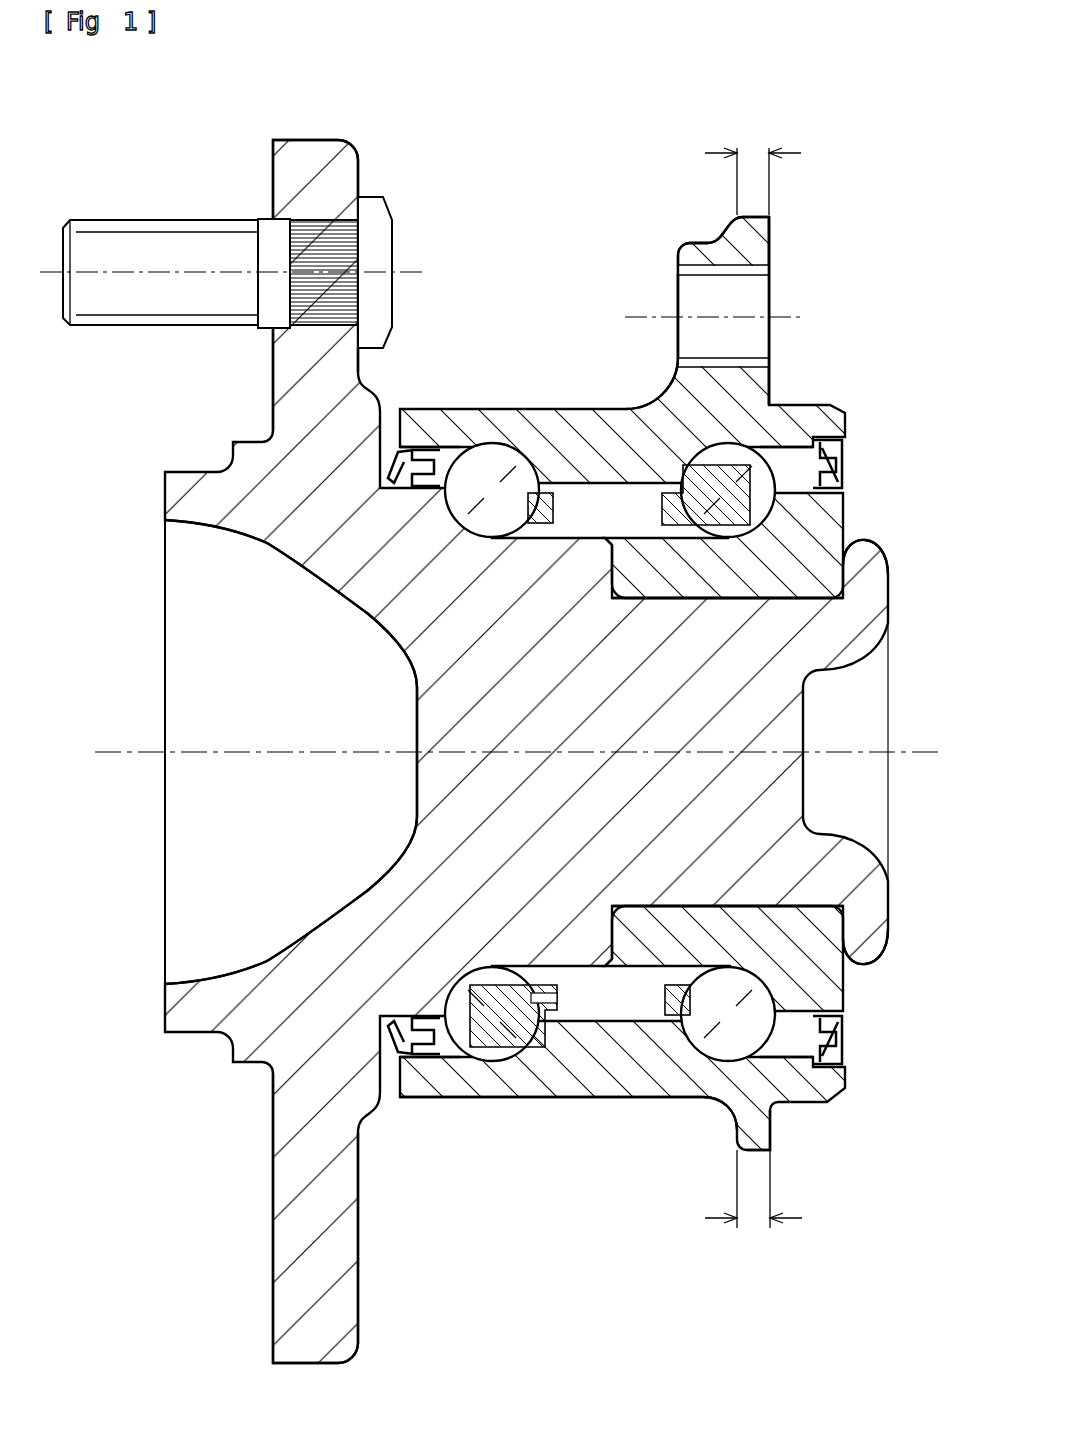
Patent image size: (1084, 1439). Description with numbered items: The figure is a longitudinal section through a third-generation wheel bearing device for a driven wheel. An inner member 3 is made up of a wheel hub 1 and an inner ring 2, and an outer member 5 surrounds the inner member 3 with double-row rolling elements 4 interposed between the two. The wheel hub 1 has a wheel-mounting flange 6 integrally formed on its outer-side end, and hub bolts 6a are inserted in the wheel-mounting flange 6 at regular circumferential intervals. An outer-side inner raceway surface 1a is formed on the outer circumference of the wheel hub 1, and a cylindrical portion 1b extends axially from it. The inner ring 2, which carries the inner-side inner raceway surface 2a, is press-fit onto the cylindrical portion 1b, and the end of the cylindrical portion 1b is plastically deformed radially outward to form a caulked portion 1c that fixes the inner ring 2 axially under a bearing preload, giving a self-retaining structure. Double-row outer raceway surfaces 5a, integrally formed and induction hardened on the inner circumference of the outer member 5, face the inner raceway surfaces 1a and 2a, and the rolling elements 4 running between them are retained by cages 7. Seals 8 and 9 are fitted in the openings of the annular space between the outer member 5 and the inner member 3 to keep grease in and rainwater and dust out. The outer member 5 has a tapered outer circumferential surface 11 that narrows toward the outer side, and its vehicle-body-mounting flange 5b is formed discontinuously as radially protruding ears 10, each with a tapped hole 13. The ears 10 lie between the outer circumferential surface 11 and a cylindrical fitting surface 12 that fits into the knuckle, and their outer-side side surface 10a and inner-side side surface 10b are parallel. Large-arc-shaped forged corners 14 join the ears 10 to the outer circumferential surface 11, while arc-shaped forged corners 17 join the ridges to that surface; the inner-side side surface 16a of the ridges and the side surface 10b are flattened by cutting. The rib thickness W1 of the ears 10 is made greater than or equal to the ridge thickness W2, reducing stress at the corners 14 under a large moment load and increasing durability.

The wheel hub 1 is at (265, 503).
The inner raceway surface 1a is at (492, 505).
The cylindrical portion 1b is at (763, 577).
The caulked portion 1c is at (860, 568).
The inner ring 2 is at (818, 518).
The inner raceway surface 2a is at (717, 505).
The inner member 3 is at (383, 580).
The rolling elements 4 is at (660, 1098).
The outer member 5 is at (567, 445).
The outer raceway surfaces 5a is at (483, 450).
The vehicle-body-mounting flange 5b is at (700, 240).
The wheel-mounting flange 6 is at (330, 175).
The hub bolts 6a is at (213, 245).
The cages 7 is at (673, 990).
The seal 8 is at (390, 1037).
The seal 9 is at (847, 1047).
The ears 10 is at (710, 257).
The outer-side side surface 10a is at (678, 281).
The inner-side side surface 10b is at (772, 245).
The outer circumferential surface 11 is at (516, 409).
The fitting surface 12 is at (832, 437).
The tapped hole 13 is at (737, 290).
The corners 14 is at (653, 388).
The inner-side side surface 16a is at (772, 1143).
The corners 17 is at (727, 1113).
The thickness of the ribs W1 is at (753, 164).
The thickness of the ridges W2 is at (753, 1206).